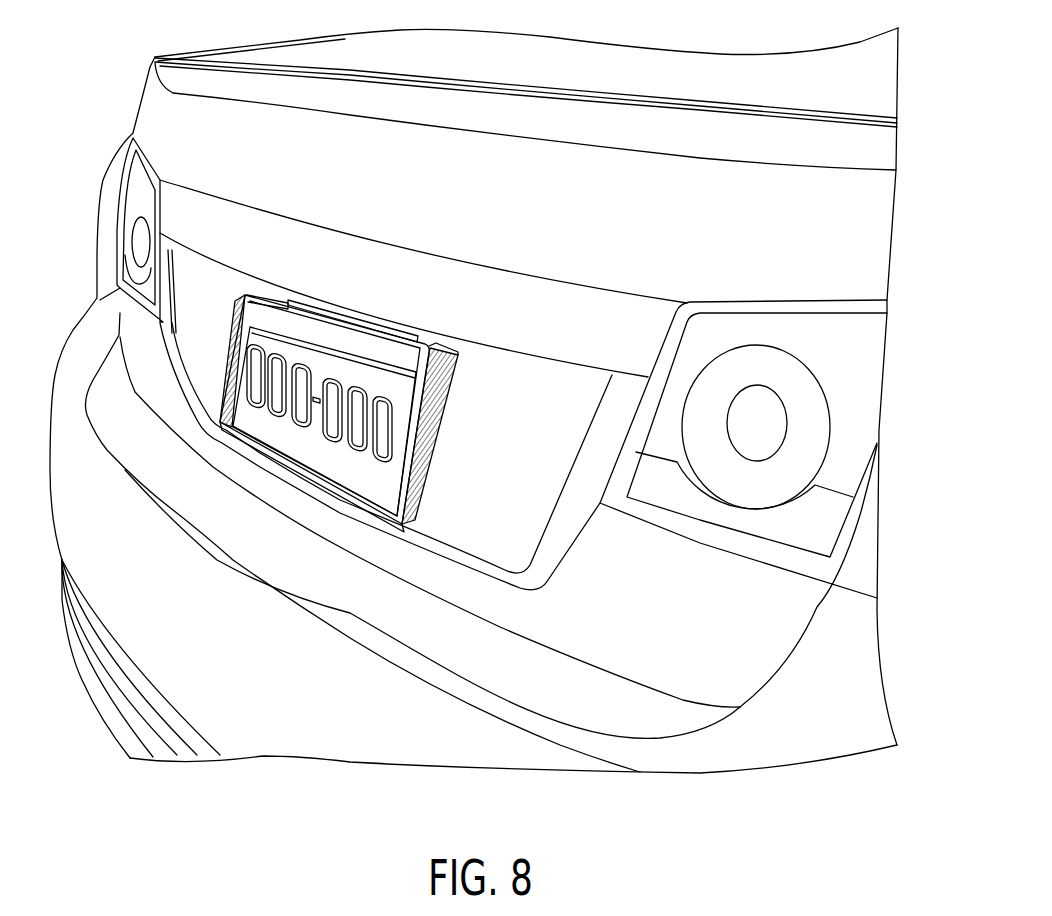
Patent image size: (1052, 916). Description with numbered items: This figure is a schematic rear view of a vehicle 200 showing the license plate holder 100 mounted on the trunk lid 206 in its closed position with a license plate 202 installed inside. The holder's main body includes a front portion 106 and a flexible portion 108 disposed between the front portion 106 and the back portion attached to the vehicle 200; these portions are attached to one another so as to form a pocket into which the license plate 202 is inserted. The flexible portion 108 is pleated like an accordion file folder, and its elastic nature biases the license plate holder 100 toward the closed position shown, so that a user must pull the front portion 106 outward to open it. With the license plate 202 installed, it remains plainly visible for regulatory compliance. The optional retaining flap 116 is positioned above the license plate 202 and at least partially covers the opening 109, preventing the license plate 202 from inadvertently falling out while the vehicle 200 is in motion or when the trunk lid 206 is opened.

The vehicle 200 is at (90, 132).
The trunk lid 206 is at (872, 251).
The license plate holder 100 is at (372, 394).
The front portion 106 is at (277, 450).
The license plate 202 is at (392, 348).
The flexible portion 108 is at (458, 384).
The retaining flap 116 is at (333, 306).
The opening 109 is at (259, 302).